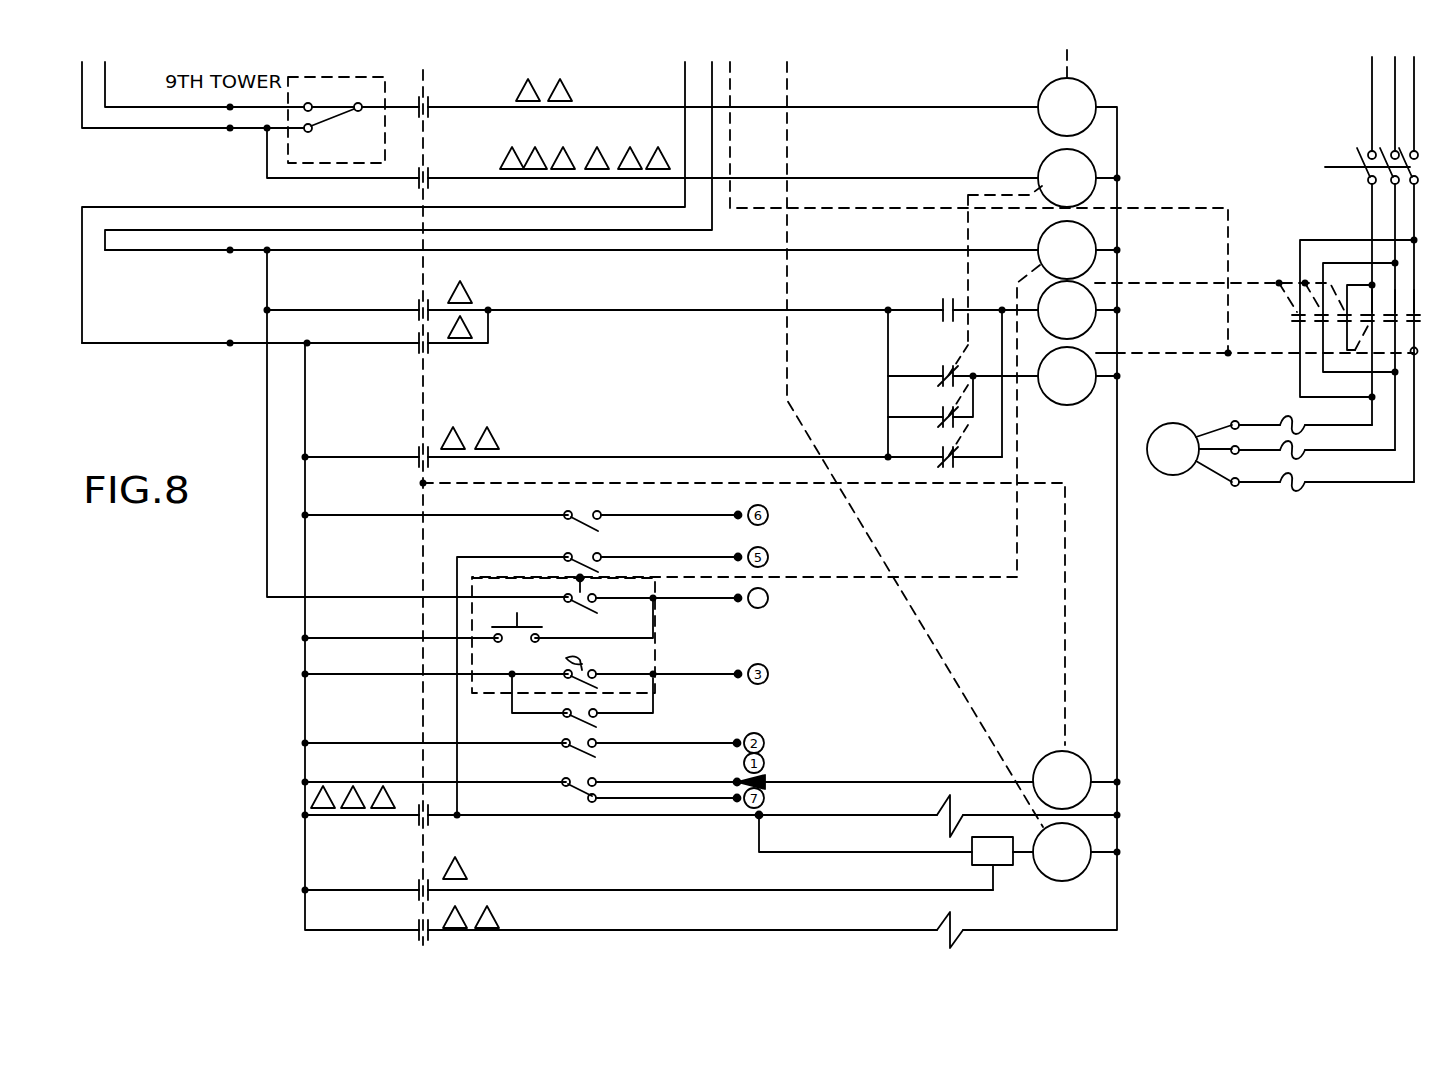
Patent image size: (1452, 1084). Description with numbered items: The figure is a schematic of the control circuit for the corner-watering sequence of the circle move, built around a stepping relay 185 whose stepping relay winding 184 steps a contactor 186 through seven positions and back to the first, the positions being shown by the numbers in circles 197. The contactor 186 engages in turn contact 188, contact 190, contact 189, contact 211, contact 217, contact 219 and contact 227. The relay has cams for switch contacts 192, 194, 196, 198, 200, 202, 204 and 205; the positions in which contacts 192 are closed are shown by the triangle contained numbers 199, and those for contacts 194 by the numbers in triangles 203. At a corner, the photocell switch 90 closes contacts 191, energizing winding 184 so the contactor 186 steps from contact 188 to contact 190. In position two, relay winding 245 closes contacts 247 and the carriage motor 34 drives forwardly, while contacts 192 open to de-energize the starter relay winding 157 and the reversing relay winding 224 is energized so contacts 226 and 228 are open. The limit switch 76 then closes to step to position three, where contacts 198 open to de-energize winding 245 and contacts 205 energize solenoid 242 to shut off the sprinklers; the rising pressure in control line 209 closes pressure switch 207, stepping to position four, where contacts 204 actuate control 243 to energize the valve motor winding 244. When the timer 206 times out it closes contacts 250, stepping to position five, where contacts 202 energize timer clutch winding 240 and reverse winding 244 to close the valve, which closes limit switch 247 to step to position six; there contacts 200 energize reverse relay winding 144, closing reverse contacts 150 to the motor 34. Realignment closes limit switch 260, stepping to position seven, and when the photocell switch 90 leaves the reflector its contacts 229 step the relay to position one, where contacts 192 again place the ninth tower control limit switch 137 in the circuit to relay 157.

The ninth tower control limit switch 137 is at (340, 114).
The switch contacts 192 is at (421, 98).
The triangle contained numbers 199 is at (572, 96).
The switch contacts 194 is at (421, 168).
The numbers in triangles 203 is at (605, 148).
The switch contacts 196 is at (420, 300).
The switch contacts 198 is at (429, 353).
The switch contacts 200 is at (418, 447).
The limit switch 260 is at (585, 510).
The position six contact 219 is at (738, 513).
The contacts / limit switch 247 is at (595, 568).
The position five contact 217 is at (738, 555).
The timer contacts 250 is at (596, 604).
The position four contact 211 is at (738, 600).
The numbers in circles 197 is at (760, 567).
The pressure switch 207 is at (590, 658).
The position three contact 189 is at (738, 672).
The control line 209 is at (680, 677).
The limit switch 76 is at (577, 741).
The photocell switch 90 is at (585, 773).
The position two contact 190 is at (754, 733).
The photocell switch contacts 191 is at (596, 778).
The position one contact 188 is at (737, 780).
The photocell switch contacts 229 is at (593, 802).
The position seven contact 227 is at (741, 803).
The contactor 186 is at (862, 782).
The timer clutch winding 240 is at (954, 808).
The stepping relay winding 184 is at (1044, 757).
The stepping relay 185 is at (1091, 753).
The control 243 is at (983, 865).
The solenoid 242 is at (945, 916).
The valve motor winding 244 is at (1084, 881).
The switch contacts 202 is at (417, 822).
The switch contacts 204 is at (417, 880).
The switch contacts 205 is at (417, 940).
The starter relay winding 157 is at (1042, 94).
The reversing relay winding 224 is at (1042, 165).
The timer 206 is at (1040, 238).
The contacts 226 is at (946, 300).
The contacts 228 is at (940, 408).
The relay winding 245 is at (1095, 292).
The reverse relay winding 144 is at (1072, 405).
The reverse contacts 150 is at (1414, 310).
The carriage motor 34 is at (1182, 426).